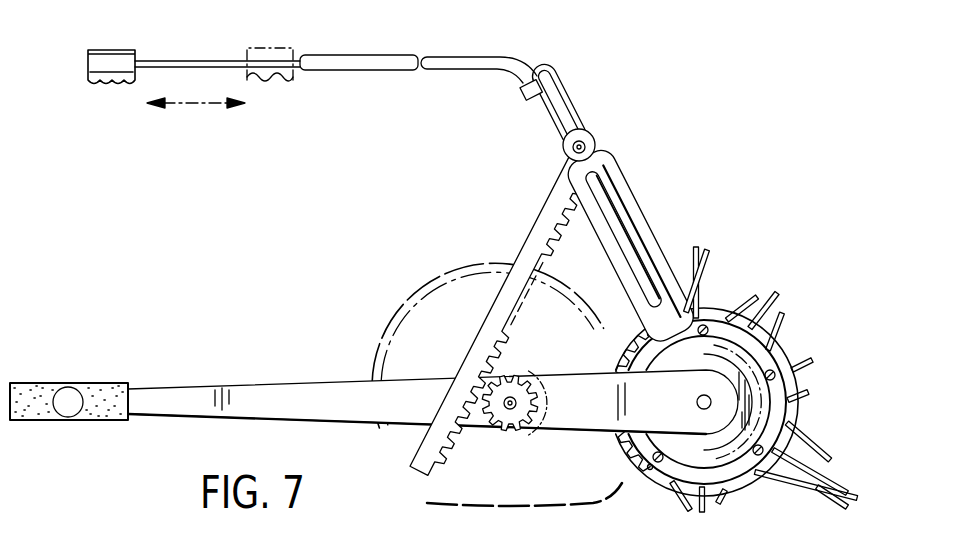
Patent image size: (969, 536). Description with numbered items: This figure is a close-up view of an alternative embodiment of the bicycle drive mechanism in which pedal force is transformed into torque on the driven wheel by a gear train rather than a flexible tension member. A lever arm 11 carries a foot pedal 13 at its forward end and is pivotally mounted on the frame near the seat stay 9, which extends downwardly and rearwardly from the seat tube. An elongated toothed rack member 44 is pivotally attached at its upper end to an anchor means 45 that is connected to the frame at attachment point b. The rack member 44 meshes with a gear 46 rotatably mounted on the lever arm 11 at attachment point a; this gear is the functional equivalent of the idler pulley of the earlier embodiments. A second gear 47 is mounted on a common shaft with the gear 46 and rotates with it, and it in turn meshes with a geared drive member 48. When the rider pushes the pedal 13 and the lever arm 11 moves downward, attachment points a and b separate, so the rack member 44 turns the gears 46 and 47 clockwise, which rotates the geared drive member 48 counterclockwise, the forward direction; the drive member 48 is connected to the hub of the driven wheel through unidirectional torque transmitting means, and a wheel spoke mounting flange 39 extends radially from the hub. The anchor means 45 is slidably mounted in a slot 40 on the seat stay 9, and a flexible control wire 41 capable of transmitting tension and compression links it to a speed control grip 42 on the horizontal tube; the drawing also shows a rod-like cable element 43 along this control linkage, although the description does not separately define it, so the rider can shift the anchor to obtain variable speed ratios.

The seat stay 9 is at (620, 188).
The lever arm 11 is at (199, 400).
The foot pedal 13 is at (35, 418).
The wheel spoke mounting flange 39 is at (788, 352).
The slot 40 is at (622, 212).
The flexible control wire 41 is at (556, 97).
The speed control grip 42 is at (90, 52).
The operating rod 43 is at (509, 57).
The toothed rack member 44 is at (535, 222).
The anchor means 45 is at (573, 148).
The gear 46 is at (521, 427).
The second gear 47 is at (638, 338).
The geared drive member 48 is at (684, 296).
The attachment point a is at (588, 146).
The attachment point b is at (508, 409).